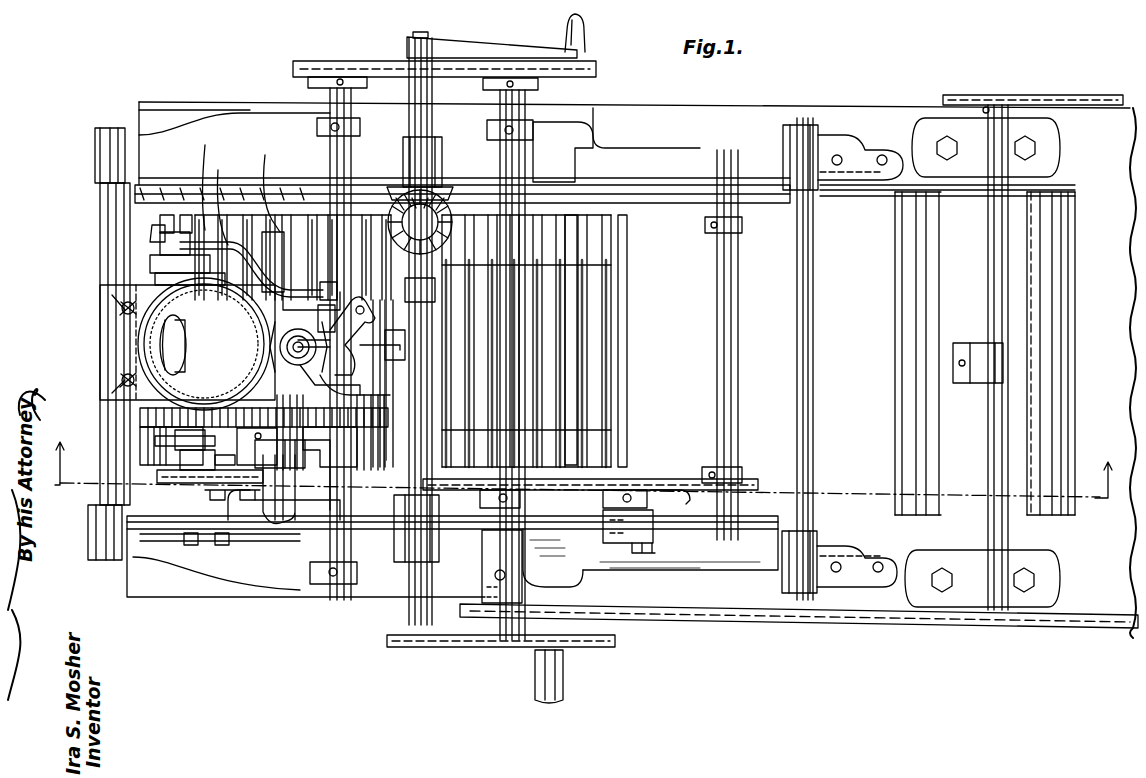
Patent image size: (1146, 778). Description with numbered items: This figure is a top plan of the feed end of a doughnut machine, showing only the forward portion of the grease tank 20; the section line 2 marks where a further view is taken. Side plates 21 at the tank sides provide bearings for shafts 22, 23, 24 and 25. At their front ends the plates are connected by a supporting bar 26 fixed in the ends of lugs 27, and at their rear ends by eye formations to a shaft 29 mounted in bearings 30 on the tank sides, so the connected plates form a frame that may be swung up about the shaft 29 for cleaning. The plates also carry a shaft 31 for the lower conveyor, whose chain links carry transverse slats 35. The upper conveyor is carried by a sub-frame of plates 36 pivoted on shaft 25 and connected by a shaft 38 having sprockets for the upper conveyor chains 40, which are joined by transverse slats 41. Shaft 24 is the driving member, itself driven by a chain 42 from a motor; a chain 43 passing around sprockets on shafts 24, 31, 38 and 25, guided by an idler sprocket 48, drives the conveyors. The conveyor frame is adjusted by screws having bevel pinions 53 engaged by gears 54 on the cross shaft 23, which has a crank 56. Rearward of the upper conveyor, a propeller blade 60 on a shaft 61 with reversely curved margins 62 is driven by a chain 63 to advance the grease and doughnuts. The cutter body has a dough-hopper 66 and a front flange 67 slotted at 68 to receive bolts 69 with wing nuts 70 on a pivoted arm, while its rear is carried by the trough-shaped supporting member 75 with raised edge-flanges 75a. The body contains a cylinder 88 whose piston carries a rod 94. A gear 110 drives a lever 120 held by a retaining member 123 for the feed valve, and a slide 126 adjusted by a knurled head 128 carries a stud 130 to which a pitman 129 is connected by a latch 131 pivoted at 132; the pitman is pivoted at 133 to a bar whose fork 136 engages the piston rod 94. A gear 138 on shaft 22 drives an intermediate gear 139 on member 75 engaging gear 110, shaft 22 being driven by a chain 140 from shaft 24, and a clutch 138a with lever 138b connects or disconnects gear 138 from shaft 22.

The grease tank 20 is at (599, 370).
The section line 2 is at (583, 465).
The side plates 21 is at (185, 162).
The shaft 22 is at (328, 92).
The cross shaft 23 is at (432, 90).
The shaft 24 is at (538, 99).
The shaft 25 is at (731, 283).
The supporting bar 26 is at (105, 211).
The lugs 27 is at (104, 157).
The shaft 29 is at (812, 283).
The bearings 30 is at (810, 130).
The shaft 31 is at (180, 484).
The transverse slats 35 is at (260, 225).
The plates 36 is at (626, 194).
The shaft 38 is at (572, 225).
The upper conveyor chains 40 is at (613, 272).
The transverse slats 41 is at (628, 238).
The chain 42 is at (592, 650).
The chain 43 is at (465, 500).
The idler sprocket 48 is at (652, 479).
The bevel pinions 53 is at (400, 195).
The gears 54 is at (440, 190).
The crank 56 is at (522, 50).
The blade 60 is at (1030, 262).
The shaft 61 is at (990, 300).
The margins 62 is at (905, 242).
The chain 63 is at (1080, 96).
The dough-hopper 66 is at (147, 348).
The front flange 67 is at (116, 335).
The slots 68 is at (117, 300).
The bolts 69 is at (116, 314).
The wing nuts 70 is at (186, 330).
The shaft-supporting frame member 75 is at (385, 340).
The raised edge-flanges 75a is at (330, 378).
The cylinder 88 is at (280, 352).
The piston rod 94 is at (320, 330).
The gear 110 is at (258, 365).
The cross arm or lever 120 is at (155, 440).
The retaining member 123 is at (175, 455).
The slide 126 is at (145, 260).
The knurled head 128 is at (203, 346).
The pitman 129 is at (228, 196).
The stud 130 is at (176, 215).
The latch 131 is at (158, 225).
The pivot 132 is at (210, 175).
The pivotal connection 133 is at (263, 212).
The fork 136 is at (355, 346).
The gear 138 is at (338, 480).
The clutch 138a is at (320, 545).
The lever 138b is at (280, 525).
The intermediate gear 139 is at (275, 402).
The chain 140 is at (393, 62).